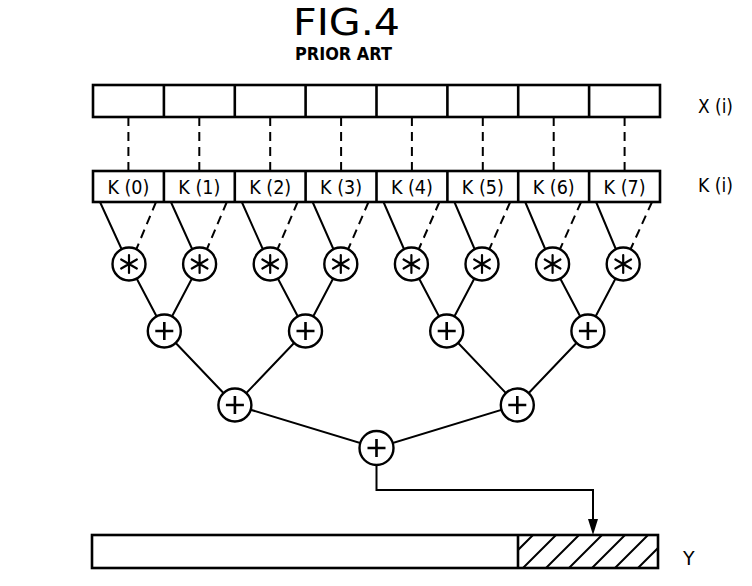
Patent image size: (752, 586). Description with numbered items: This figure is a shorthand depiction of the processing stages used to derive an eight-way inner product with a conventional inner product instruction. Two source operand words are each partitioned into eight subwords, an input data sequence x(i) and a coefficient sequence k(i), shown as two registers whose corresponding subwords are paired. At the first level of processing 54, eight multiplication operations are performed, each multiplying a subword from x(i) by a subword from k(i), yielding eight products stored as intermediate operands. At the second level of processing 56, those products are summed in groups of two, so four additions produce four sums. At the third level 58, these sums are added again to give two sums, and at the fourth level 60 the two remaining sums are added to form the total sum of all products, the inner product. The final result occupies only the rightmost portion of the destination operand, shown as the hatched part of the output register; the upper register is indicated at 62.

The first level of processing 54 is at (96, 262).
The second level of processing 56 is at (96, 328).
The third level 58 is at (96, 404).
The fourth level 60 is at (96, 445).
The input data register X(i) 62 is at (590, 64).